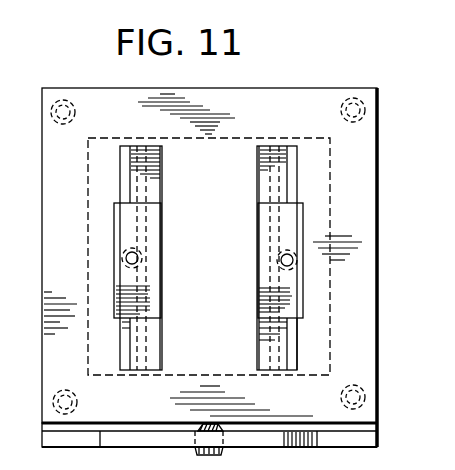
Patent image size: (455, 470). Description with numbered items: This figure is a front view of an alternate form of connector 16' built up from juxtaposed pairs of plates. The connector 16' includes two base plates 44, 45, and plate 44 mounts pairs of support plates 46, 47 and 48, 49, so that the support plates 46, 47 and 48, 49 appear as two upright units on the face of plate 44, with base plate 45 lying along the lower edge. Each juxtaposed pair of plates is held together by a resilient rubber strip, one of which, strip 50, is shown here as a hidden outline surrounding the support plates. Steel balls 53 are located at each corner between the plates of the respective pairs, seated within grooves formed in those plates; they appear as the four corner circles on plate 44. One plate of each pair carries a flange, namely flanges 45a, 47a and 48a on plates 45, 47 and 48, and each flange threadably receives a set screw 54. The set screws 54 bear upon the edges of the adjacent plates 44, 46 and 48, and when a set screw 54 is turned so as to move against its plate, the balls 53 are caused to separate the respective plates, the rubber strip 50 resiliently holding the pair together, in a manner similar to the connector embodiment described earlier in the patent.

The connector 16' is at (411, 237).
The base plate 44 is at (365, 170).
The base plate 45 is at (370, 426).
The flange 45a is at (135, 440).
The support plate 46 is at (290, 345).
The support plate 47 is at (263, 340).
The flange 47a is at (300, 222).
The support plate 48 is at (120, 350).
The flange 48a is at (115, 232).
The support plate 49 is at (152, 283).
The resilient rubber strip 50 is at (330, 367).
The steel ball 53 is at (66, 100).
The set screw 54 is at (218, 455).